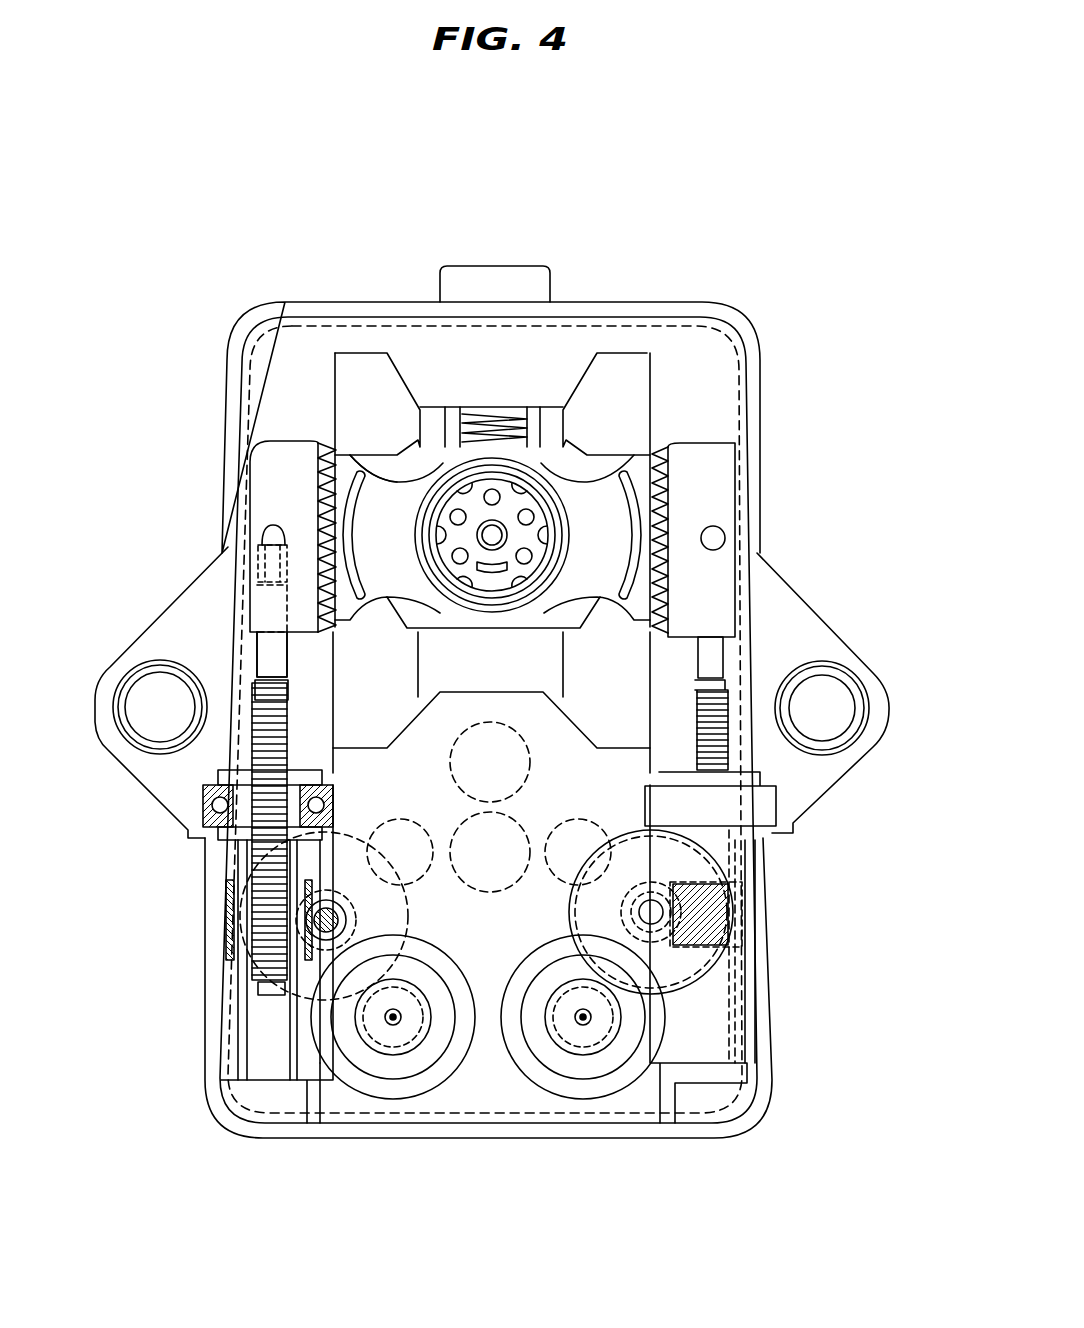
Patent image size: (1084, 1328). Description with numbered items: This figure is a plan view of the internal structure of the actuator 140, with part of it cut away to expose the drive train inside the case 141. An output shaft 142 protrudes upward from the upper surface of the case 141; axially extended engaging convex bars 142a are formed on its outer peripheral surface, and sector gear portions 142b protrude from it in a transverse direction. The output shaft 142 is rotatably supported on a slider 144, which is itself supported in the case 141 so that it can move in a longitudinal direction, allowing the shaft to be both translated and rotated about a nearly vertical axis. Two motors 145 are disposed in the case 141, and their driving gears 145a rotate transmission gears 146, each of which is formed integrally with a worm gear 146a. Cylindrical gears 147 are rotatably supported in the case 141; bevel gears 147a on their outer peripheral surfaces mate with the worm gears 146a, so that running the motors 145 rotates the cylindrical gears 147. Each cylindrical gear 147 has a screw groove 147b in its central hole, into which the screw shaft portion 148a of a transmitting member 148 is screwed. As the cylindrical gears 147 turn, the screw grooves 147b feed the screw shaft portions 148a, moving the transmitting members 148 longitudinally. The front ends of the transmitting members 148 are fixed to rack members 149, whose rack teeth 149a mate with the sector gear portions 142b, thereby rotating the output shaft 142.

The actuator 140 is at (732, 264).
The case 141 is at (320, 300).
The output shaft 142 is at (560, 390).
The engaging convex bar 142a is at (465, 480).
The sector gear portion 142b is at (322, 512).
The slider 144 is at (535, 523).
The motor 145 is at (390, 1072).
The driving gear 145a is at (413, 1050).
The transmission gear 146 is at (740, 1015).
The worm gear 146a is at (765, 905).
The cylindrical gear 147 is at (233, 840).
The bevel gear 147a is at (227, 925).
The screw groove 147b is at (253, 830).
The transmitting member 148 is at (242, 650).
The screw shaft portion 148a is at (266, 655).
The rack member 149 is at (293, 442).
The rack teeth 149a is at (327, 445).